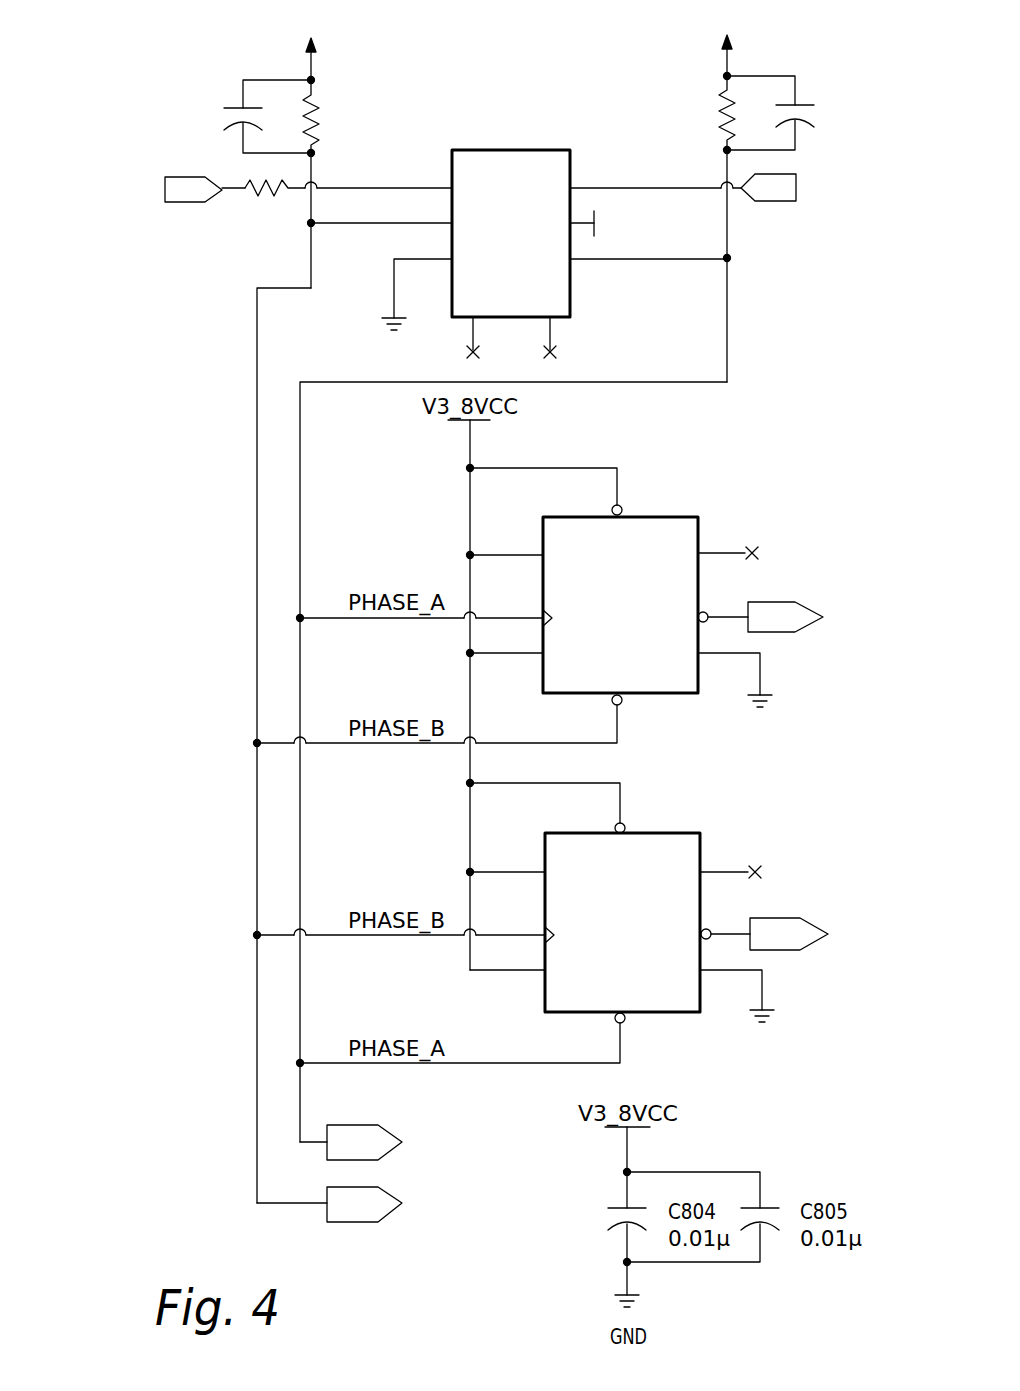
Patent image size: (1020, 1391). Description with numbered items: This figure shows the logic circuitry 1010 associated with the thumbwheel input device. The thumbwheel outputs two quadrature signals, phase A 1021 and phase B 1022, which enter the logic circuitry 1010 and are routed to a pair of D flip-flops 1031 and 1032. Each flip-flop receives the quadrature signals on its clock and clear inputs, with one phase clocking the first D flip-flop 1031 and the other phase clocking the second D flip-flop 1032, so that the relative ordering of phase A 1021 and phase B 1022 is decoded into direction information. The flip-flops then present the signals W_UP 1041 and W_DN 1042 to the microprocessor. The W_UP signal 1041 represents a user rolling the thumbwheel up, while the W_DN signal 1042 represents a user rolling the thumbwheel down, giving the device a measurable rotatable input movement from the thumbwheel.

The logic circuitry 1010 is at (795, 43).
The D flip-flop 1031 is at (670, 517).
The D flip-flop 1032 is at (675, 833).
The W_UP signal 1041 is at (857, 634).
The W_DN signal 1042 is at (862, 951).
The phase A signal 1021 is at (490, 1128).
The phase B signal 1022 is at (495, 1225).